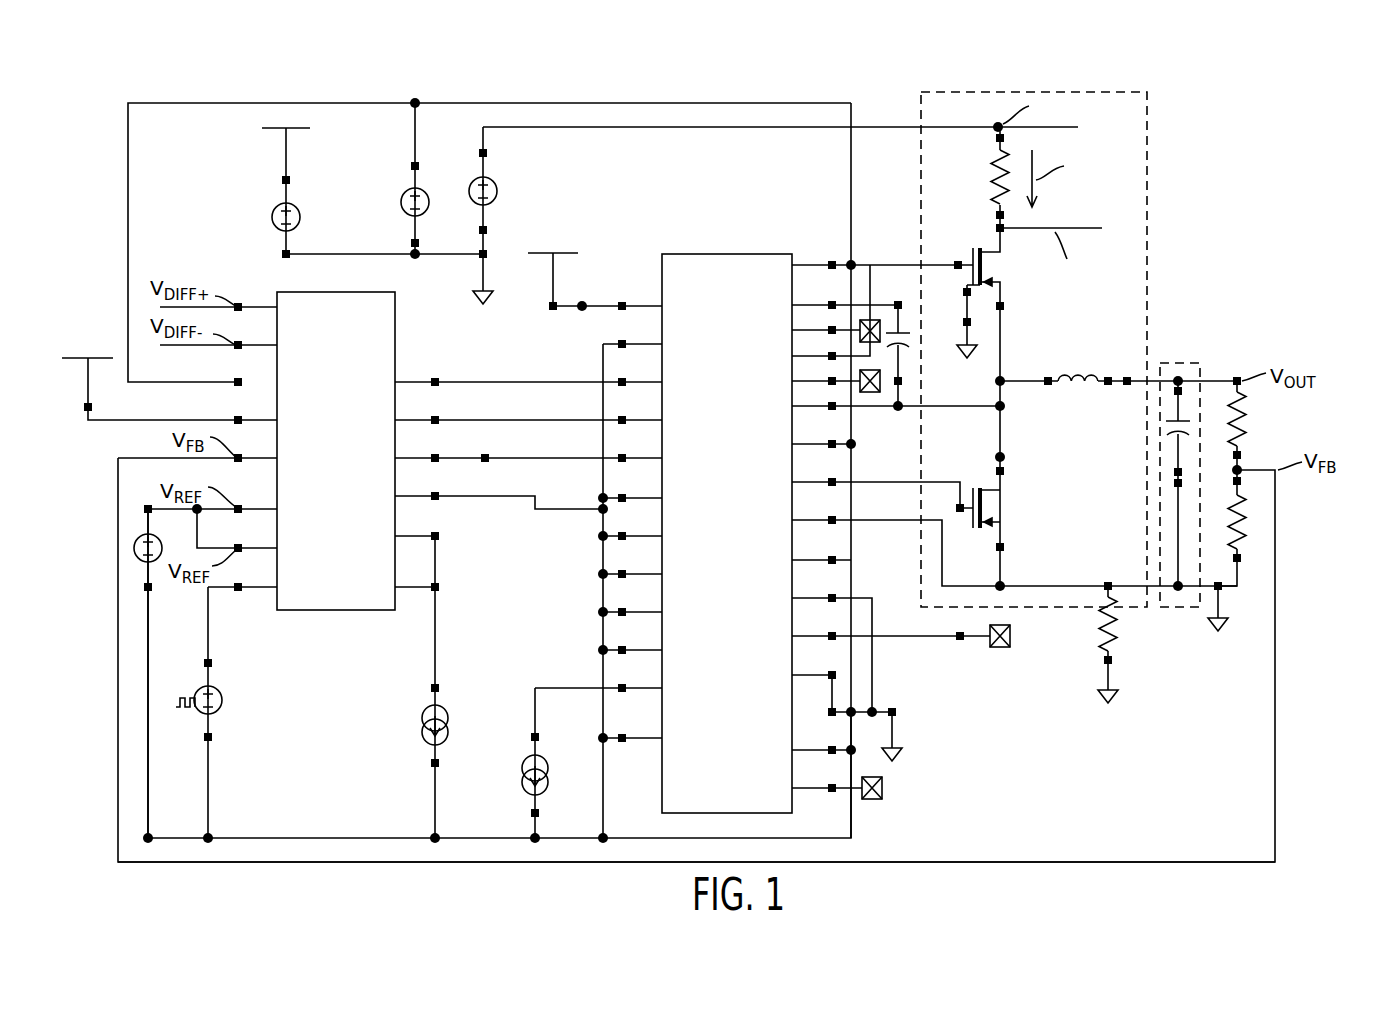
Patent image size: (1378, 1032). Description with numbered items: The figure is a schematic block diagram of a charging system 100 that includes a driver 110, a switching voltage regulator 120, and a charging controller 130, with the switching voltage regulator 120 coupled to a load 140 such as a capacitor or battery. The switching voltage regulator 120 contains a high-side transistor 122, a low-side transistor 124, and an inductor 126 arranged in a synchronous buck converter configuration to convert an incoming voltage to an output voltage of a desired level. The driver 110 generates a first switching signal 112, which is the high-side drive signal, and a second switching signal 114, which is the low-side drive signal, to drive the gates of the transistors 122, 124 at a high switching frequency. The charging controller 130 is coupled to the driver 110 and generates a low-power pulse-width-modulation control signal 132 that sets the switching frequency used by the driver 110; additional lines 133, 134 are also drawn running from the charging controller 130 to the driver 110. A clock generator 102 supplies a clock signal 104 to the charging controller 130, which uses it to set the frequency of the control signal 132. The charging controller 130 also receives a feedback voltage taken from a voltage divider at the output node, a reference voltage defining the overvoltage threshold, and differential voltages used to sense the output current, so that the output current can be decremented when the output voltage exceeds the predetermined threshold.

The charging system 100 is at (1211, 111).
The clock generator 102 is at (222, 700).
The clock signal 104 is at (242, 592).
The driver 110 is at (727, 533).
The first switching signal 112 is at (892, 264).
The second switching signal 114 is at (892, 482).
The switching voltage regulator 120 is at (1150, 190).
The high-side transistor 122 is at (980, 248).
The low-side transistor 124 is at (987, 488).
The inductor 126 is at (1085, 372).
The charging controller 130 is at (336, 451).
The control signal 132 is at (500, 418).
The control signal line 133 is at (513, 378).
The control signal line 134 is at (490, 455).
The load 140 is at (1200, 368).